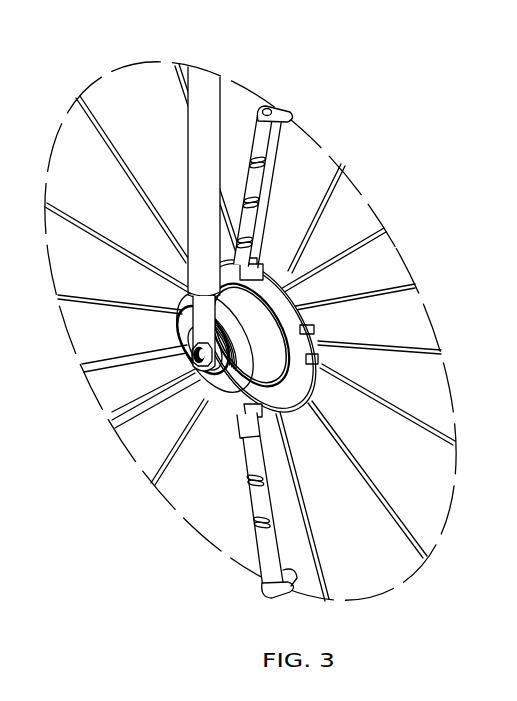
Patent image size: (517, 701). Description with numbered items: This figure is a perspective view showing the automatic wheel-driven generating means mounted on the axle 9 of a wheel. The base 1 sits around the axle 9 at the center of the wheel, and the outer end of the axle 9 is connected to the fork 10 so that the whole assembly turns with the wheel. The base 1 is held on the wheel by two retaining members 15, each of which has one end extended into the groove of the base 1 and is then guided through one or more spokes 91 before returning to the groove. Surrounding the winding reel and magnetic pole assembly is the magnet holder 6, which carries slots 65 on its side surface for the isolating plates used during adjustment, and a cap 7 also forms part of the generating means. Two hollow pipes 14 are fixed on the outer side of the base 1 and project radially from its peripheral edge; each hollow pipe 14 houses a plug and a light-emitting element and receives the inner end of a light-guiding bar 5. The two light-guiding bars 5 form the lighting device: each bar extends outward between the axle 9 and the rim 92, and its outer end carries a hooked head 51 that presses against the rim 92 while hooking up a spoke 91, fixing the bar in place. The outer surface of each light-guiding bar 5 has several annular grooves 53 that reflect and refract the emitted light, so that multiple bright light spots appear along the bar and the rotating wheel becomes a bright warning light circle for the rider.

The base 1 is at (285, 316).
The light-guiding bar 5 is at (258, 135).
The hooked head 51 is at (273, 109).
The annular grooves 53 is at (273, 160).
The hollow pipe 14 is at (272, 260).
The retaining member 15 is at (390, 392).
The magnet holder 6 is at (185, 316).
The cap 7 is at (122, 371).
The axle 9 is at (112, 412).
The fork 10 is at (197, 92).
The slots 65 is at (212, 402).
The spoke 91 is at (407, 412).
The rim 92 is at (387, 591).